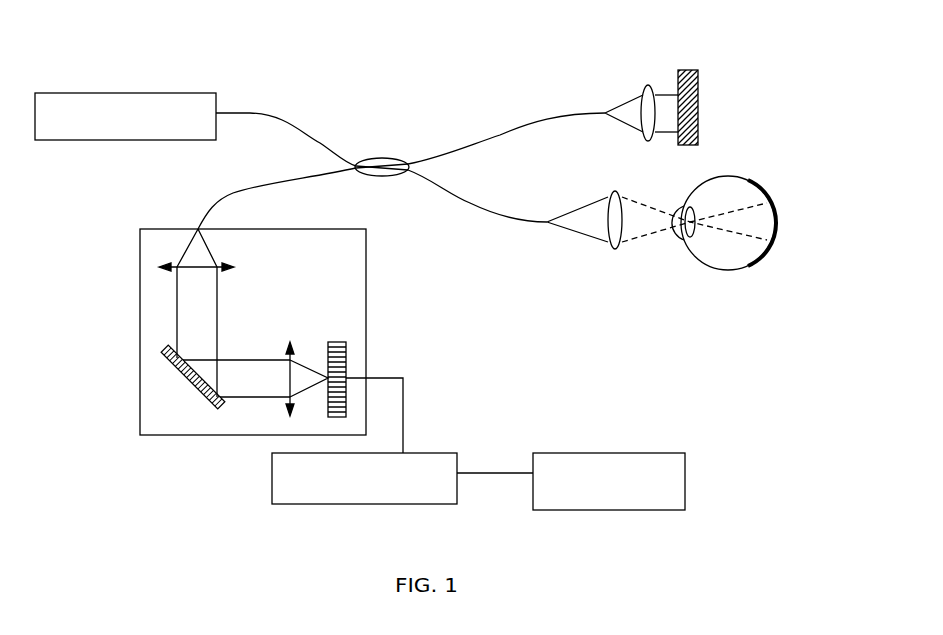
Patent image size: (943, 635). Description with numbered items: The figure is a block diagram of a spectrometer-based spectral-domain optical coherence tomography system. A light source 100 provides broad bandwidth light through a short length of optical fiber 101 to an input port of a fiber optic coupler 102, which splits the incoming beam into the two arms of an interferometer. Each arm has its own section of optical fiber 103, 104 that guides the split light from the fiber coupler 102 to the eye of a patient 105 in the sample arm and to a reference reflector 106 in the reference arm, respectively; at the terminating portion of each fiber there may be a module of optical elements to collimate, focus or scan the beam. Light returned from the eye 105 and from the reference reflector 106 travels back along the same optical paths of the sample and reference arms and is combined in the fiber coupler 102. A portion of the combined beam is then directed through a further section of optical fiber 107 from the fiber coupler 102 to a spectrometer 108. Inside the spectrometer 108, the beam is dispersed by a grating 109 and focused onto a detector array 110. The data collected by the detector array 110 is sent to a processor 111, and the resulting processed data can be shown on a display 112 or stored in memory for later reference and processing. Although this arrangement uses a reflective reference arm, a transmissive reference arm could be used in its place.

The light source 100 is at (122, 92).
The optical fiber 101 is at (279, 117).
The fiber optic coupler 102 is at (378, 147).
The optical fiber 103 is at (488, 227).
The optical fiber 104 is at (508, 125).
The eye of a patient 105 is at (737, 285).
The reference reflector 106 is at (685, 60).
The optical fiber 107 is at (233, 193).
The spectrometer 108 is at (140, 308).
The grating 109 is at (178, 380).
The detector array 110 is at (328, 340).
The processor 111 is at (368, 510).
The display 112 is at (610, 453).